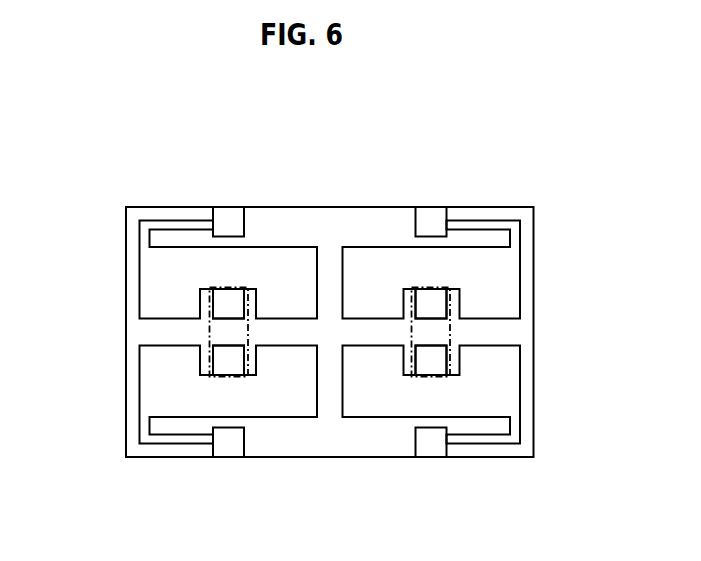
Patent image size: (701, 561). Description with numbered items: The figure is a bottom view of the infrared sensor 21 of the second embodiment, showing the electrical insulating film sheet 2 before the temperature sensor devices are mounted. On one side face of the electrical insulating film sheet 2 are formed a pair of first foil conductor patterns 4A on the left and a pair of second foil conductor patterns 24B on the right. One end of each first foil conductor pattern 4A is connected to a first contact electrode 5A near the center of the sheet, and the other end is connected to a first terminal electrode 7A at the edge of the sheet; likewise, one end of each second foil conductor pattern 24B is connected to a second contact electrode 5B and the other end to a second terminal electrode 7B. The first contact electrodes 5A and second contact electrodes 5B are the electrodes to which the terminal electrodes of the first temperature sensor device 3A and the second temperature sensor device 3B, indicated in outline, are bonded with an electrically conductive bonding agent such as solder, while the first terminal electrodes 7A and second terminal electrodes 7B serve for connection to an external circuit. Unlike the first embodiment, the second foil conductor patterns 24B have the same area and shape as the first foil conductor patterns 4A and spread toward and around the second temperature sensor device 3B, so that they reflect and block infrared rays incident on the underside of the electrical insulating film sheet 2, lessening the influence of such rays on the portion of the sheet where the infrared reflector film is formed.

The infrared sensor 21 is at (492, 166).
The electrical insulating film sheet 2 is at (491, 206).
The first temperature sensor device 3A is at (210, 337).
The second temperature sensor device 3B is at (450, 337).
The first foil conductor patterns 4A is at (140, 265).
The second foil conductor patterns 24B is at (520, 265).
The first contact electrode 5A is at (237, 307).
The second contact electrode 5B is at (425, 306).
The first terminal electrode 7A is at (228, 219).
The second terminal electrode 7B is at (433, 218).